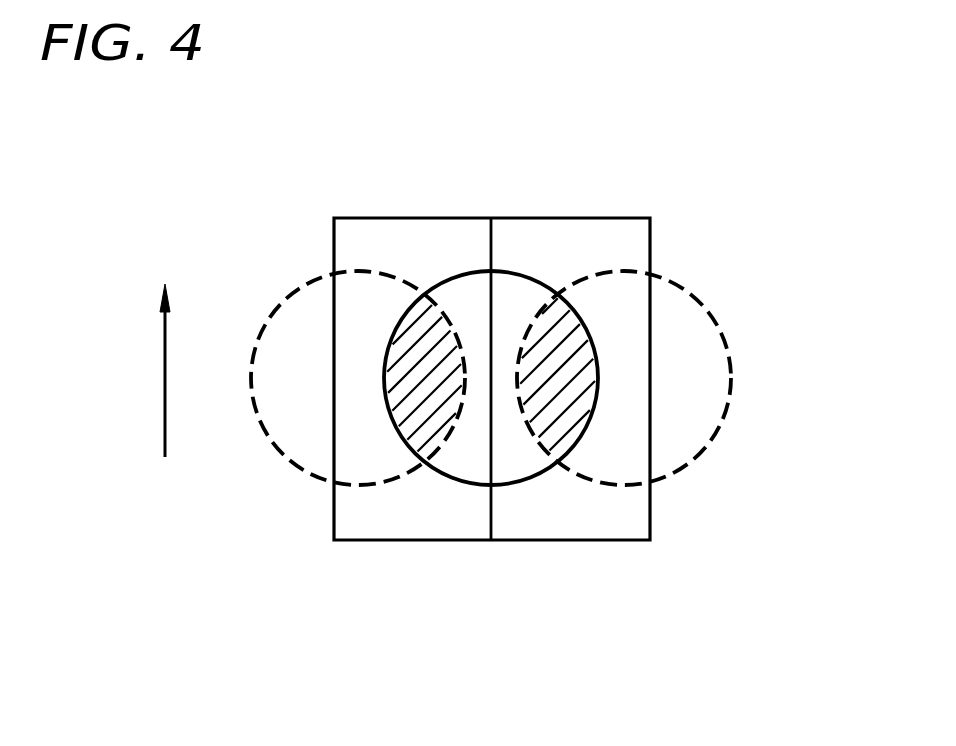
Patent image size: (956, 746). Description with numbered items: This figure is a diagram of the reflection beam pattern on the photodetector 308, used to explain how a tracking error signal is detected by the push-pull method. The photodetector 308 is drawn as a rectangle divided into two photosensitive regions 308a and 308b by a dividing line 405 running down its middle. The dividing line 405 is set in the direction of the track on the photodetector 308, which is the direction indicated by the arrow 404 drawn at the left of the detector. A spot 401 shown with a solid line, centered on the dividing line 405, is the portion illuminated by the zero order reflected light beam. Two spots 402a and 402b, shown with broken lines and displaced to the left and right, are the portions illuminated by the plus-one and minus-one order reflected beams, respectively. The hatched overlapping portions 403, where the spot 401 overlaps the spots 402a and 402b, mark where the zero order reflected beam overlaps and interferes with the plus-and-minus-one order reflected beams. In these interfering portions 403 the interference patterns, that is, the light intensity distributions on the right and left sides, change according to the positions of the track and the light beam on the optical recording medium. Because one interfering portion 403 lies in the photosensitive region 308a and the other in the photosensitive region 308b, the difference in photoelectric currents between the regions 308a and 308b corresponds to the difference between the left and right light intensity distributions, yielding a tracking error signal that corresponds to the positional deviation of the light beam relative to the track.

The photodetector 308 is at (578, 123).
The photosensitive region 308a is at (409, 243).
The photosensitive region 308b is at (575, 250).
The spot 401 is at (543, 473).
The spot 402a is at (280, 430).
The spot 402b is at (713, 440).
The overlapping portions 403 is at (527, 407).
The arrow 404 is at (162, 343).
The dividing line 405 is at (493, 517).